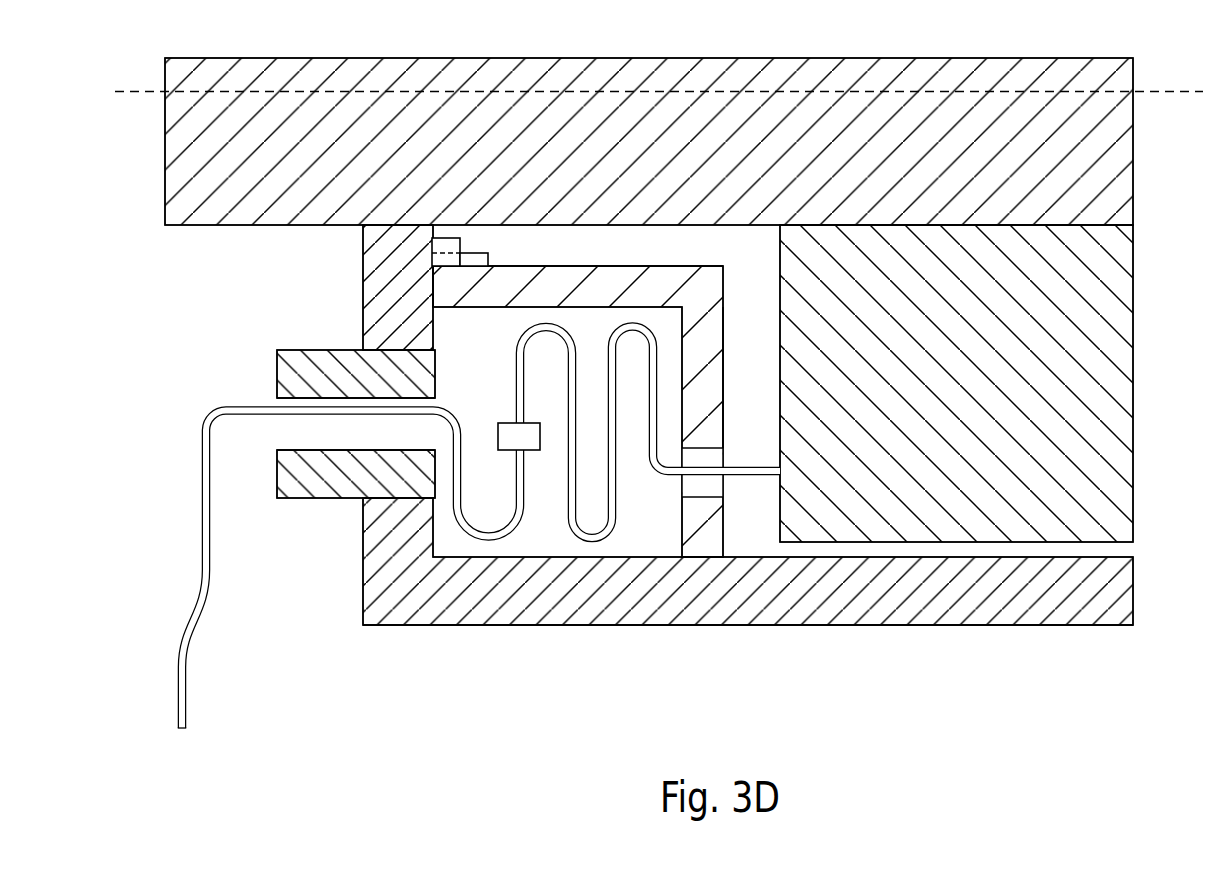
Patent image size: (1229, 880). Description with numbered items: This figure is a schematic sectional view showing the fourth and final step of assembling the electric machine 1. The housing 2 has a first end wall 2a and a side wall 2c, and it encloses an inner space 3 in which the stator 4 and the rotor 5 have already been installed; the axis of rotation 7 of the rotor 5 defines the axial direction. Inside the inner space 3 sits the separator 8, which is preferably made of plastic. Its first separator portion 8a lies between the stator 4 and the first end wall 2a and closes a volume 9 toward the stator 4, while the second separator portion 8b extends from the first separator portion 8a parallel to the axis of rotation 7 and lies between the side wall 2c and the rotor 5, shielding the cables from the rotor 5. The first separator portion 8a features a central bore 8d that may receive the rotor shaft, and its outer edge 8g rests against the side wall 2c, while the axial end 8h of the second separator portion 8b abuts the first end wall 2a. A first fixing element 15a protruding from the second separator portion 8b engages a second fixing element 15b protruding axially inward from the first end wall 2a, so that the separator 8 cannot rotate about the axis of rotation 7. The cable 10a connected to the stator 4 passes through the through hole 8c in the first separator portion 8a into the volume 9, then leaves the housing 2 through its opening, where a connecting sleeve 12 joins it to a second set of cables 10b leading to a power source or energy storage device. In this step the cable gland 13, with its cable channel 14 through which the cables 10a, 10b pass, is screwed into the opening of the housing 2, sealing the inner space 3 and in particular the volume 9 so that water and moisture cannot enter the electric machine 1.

The electric machine 1 is at (1080, 645).
The housing 2 is at (716, 462).
The first end wall 2a is at (363, 278).
The side wall 2c is at (935, 627).
The inner space 3 is at (1175, 280).
The stator 4 is at (1130, 374).
The rotor 5 is at (932, 70).
The axis of rotation 7 is at (1165, 95).
The separator 8 is at (718, 327).
The first separator portion 8a is at (723, 370).
The second separator portion 8b is at (630, 266).
The through hole 8c is at (735, 452).
The central bore 8d is at (725, 165).
The outer edge 8g is at (700, 558).
The axial end 8h is at (433, 275).
The volume 9 is at (467, 547).
The cable 10a is at (658, 464).
The second set of cables 10b is at (182, 650).
The connecting sleeve 12 is at (508, 424).
The cable gland 13 is at (318, 492).
The cable channel 14 is at (290, 440).
The first fixing element 15a is at (476, 253).
The second fixing element 15b is at (445, 238).